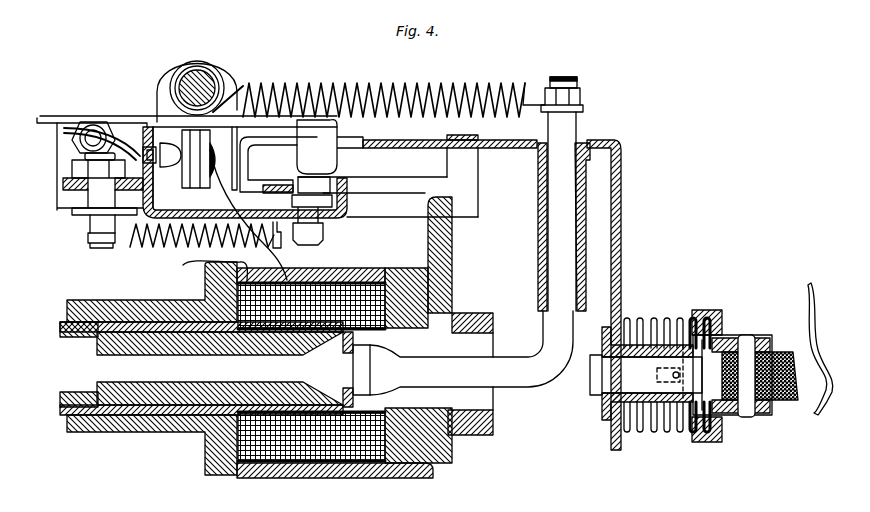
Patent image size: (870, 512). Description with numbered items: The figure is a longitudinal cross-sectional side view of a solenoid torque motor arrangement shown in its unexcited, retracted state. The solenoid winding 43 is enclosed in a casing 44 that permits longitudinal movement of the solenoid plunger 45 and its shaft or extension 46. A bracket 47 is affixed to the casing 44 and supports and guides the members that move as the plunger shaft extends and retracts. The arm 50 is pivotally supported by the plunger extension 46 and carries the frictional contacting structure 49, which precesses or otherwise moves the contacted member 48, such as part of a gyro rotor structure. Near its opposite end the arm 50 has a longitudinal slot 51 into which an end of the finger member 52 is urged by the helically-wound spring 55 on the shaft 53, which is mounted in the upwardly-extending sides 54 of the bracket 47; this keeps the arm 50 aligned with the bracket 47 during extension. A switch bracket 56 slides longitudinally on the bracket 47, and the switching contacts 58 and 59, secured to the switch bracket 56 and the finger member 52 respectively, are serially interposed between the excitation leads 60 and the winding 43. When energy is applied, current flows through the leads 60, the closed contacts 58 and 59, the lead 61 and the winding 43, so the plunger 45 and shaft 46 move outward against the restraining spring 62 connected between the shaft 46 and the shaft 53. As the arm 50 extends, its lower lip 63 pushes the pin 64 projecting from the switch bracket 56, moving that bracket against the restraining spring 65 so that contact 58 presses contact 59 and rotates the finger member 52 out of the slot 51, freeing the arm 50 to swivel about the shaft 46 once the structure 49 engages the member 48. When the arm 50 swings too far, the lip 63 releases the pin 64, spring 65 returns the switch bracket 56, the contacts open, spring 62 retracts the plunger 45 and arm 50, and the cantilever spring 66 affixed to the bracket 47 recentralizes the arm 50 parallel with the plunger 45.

The solenoid winding 43 is at (357, 284).
The casing 44 is at (204, 283).
The solenoid plunger 45 is at (165, 388).
The plunger shaft 46 is at (570, 130).
The bracket 47 is at (452, 257).
The contacted member 48 is at (806, 305).
The frictional contacting structure 49 is at (740, 306).
The arm 50 is at (390, 144).
The longitudinal slot 51 is at (266, 140).
The finger member 52 is at (340, 142).
The shaft 53 is at (195, 85).
The upwardly-extending sides 54 is at (122, 120).
The helically-wound spring 55 is at (236, 103).
The switch bracket 56 is at (214, 214).
The switching contact 58 is at (160, 152).
The switching contact 59 is at (166, 170).
The excitation leads 60 is at (40, 117).
The lead 61 is at (287, 266).
The restraining spring 62 is at (424, 86).
The lower lip 63 is at (276, 185).
The pin 64 is at (312, 186).
The restraining spring 65 is at (130, 244).
The cantilever spring 66 is at (476, 176).